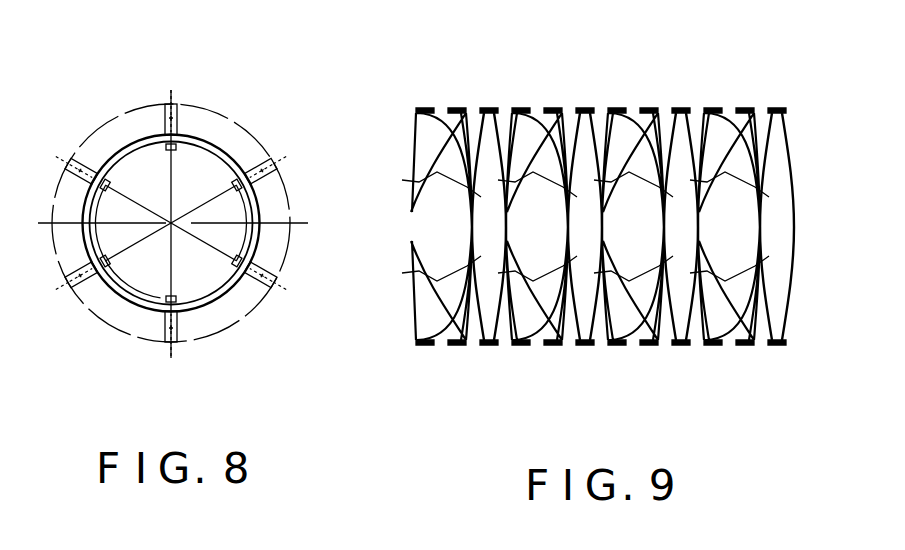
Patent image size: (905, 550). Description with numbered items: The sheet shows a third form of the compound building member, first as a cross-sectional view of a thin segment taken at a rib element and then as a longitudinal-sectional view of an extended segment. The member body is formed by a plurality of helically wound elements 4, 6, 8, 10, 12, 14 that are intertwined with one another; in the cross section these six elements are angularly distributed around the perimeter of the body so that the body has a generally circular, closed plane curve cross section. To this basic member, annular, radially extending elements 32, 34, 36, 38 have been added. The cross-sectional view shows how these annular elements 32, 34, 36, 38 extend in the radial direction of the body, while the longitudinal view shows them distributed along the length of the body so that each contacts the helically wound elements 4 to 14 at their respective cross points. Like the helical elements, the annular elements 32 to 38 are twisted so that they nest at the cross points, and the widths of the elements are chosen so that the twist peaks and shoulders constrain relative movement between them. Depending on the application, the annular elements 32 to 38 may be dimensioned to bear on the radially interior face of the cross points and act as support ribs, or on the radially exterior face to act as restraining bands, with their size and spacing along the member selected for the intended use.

In FIG. 8, the helically wound element 4 is at (88, 157).
In FIG. 9, the helically wound element 4 is at (614, 107).
In FIG. 8, the helically wound element 6 is at (176, 122).
In FIG. 9, the helically wound element 6 is at (550, 107).
In FIG. 8, the helically wound element 8 is at (250, 162).
In FIG. 9, the helically wound element 8 is at (518, 107).
In FIG. 8, the helically wound element 10 is at (258, 290).
In FIG. 9, the helically wound element 10 is at (652, 107).
In FIG. 8, the helically wound element 12 is at (163, 327).
In FIG. 9, the helically wound element 12 is at (421, 107).
In FIG. 8, the helically wound element 14 is at (91, 292).
In FIG. 9, the helically wound element 14 is at (453, 107).
In FIG. 8, the annular radial element 32 is at (215, 154).
In FIG. 9, the annular radial element 32 is at (777, 107).
In FIG. 9, the annular radial element 34 is at (681, 107).
In FIG. 9, the annular radial element 36 is at (585, 107).
In FIG. 9, the annular radial element 38 is at (489, 107).